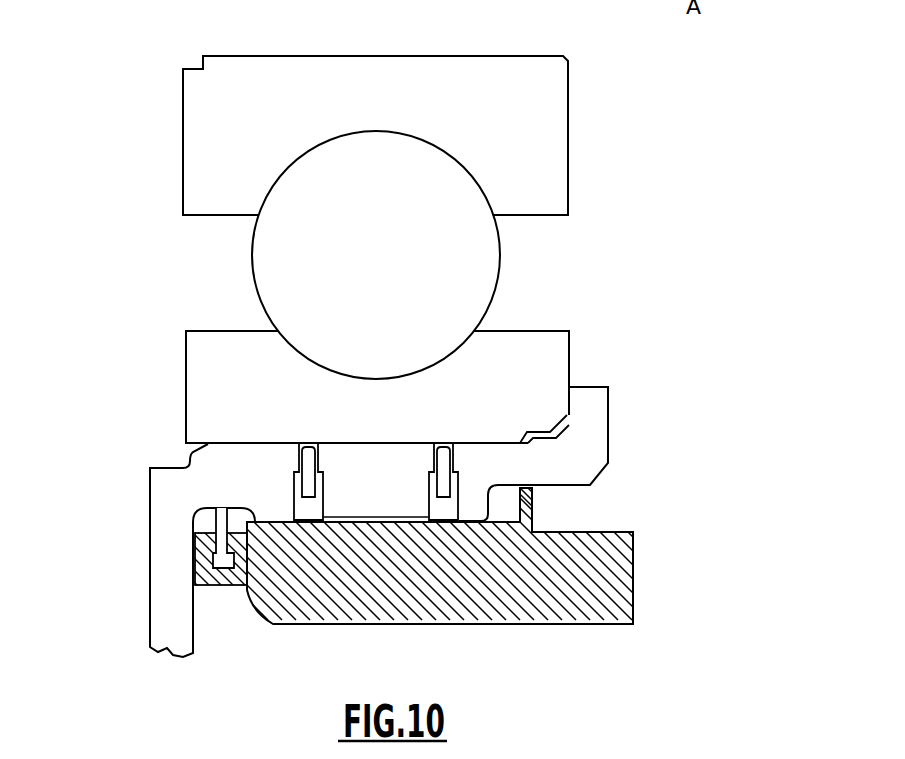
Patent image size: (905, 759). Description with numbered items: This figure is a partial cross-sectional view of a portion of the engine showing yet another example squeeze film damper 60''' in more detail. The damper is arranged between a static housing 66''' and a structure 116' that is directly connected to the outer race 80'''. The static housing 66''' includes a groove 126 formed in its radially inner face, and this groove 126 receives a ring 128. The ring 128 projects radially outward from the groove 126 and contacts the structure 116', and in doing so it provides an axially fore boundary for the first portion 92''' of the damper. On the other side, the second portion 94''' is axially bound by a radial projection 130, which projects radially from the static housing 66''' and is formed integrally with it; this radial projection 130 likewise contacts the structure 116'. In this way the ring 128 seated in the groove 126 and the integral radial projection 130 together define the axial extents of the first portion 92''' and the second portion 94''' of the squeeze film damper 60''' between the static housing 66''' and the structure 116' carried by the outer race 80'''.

The squeeze film damper 60''' is at (509, 217).
The outer race 80''' is at (422, 425).
The structure 116' is at (586, 454).
The radial projection 130 is at (533, 503).
The static housing 66''' is at (415, 552).
The second portion 94''' is at (542, 583).
The first portion 92''' is at (239, 555).
The groove 126 is at (228, 582).
The ring 128 is at (222, 527).